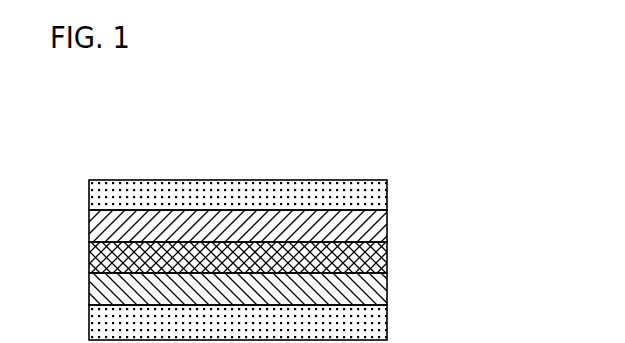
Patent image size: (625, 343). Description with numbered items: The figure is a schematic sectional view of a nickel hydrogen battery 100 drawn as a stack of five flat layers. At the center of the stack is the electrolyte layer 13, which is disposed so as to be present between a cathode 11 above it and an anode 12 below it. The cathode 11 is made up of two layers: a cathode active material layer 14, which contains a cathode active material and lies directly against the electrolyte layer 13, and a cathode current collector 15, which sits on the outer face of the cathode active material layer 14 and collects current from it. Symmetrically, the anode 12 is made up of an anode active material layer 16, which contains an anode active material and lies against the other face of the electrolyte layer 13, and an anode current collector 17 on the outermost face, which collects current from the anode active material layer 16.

The battery 100 is at (108, 84).
The cathode 11 is at (455, 165).
The anode 12 is at (455, 278).
The electrolyte layer 13 is at (388, 248).
The cathode active material layer 14 is at (388, 223).
The cathode current collector 15 is at (388, 189).
The anode active material layer 16 is at (388, 287).
The anode current collector 17 is at (388, 320).